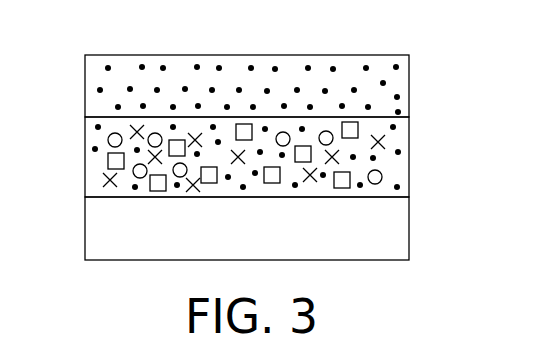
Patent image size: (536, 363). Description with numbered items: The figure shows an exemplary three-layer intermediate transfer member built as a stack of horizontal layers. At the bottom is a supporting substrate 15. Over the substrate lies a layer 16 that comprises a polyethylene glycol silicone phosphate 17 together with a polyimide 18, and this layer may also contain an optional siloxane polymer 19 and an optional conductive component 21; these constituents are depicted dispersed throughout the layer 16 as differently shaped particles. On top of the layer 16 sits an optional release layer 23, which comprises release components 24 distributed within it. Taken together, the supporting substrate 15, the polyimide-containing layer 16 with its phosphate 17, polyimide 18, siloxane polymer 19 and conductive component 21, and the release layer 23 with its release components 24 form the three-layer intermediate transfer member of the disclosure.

The supporting substrate 15 is at (85, 226).
The layer 16 is at (92, 150).
The polyethylene glycol silicone phosphate 17 is at (382, 177).
The polyimide 18 is at (108, 163).
The siloxane polymer 19 is at (386, 142).
The conductive component 21 is at (401, 153).
The release layer 23 is at (409, 80).
The release components 24 is at (140, 65).